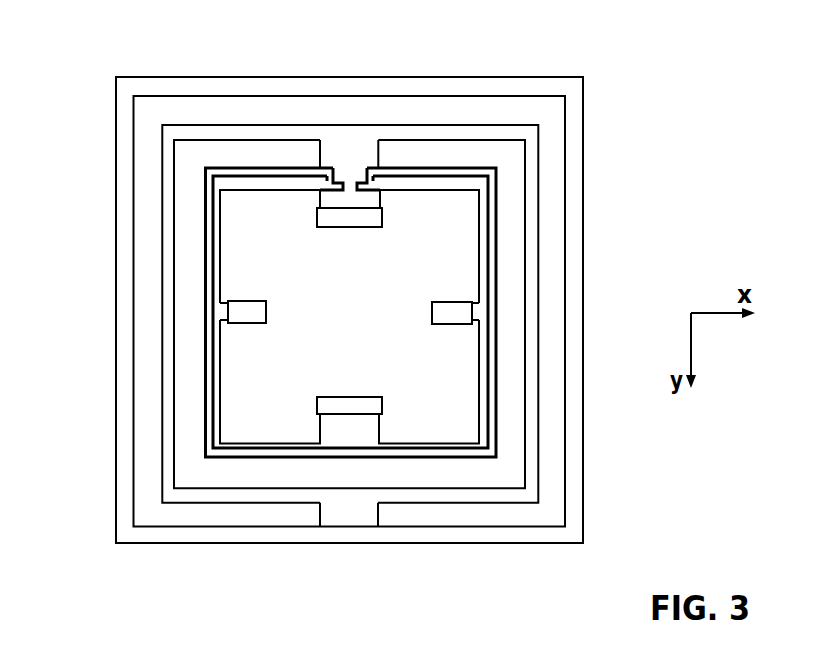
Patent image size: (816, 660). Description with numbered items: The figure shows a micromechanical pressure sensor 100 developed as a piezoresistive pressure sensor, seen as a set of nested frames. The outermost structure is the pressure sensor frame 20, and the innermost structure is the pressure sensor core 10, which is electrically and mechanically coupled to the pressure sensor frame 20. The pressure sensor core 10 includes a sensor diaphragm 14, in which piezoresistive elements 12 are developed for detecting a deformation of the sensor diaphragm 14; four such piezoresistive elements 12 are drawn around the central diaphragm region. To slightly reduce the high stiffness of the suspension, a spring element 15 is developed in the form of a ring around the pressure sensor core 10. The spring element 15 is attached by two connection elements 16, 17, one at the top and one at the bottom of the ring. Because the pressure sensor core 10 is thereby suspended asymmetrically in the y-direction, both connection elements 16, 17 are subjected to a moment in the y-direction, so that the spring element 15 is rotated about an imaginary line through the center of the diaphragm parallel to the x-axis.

The pressure sensor core 10 is at (203, 271).
The piezoresistive elements 12 is at (317, 217).
The sensor diaphragm 14 is at (365, 326).
The spring element 15 is at (293, 125).
The connection element 16 is at (380, 152).
The connection element 17 is at (380, 512).
The pressure sensor frame 20 is at (583, 168).
The micromechanical pressure sensor 100 is at (119, 561).